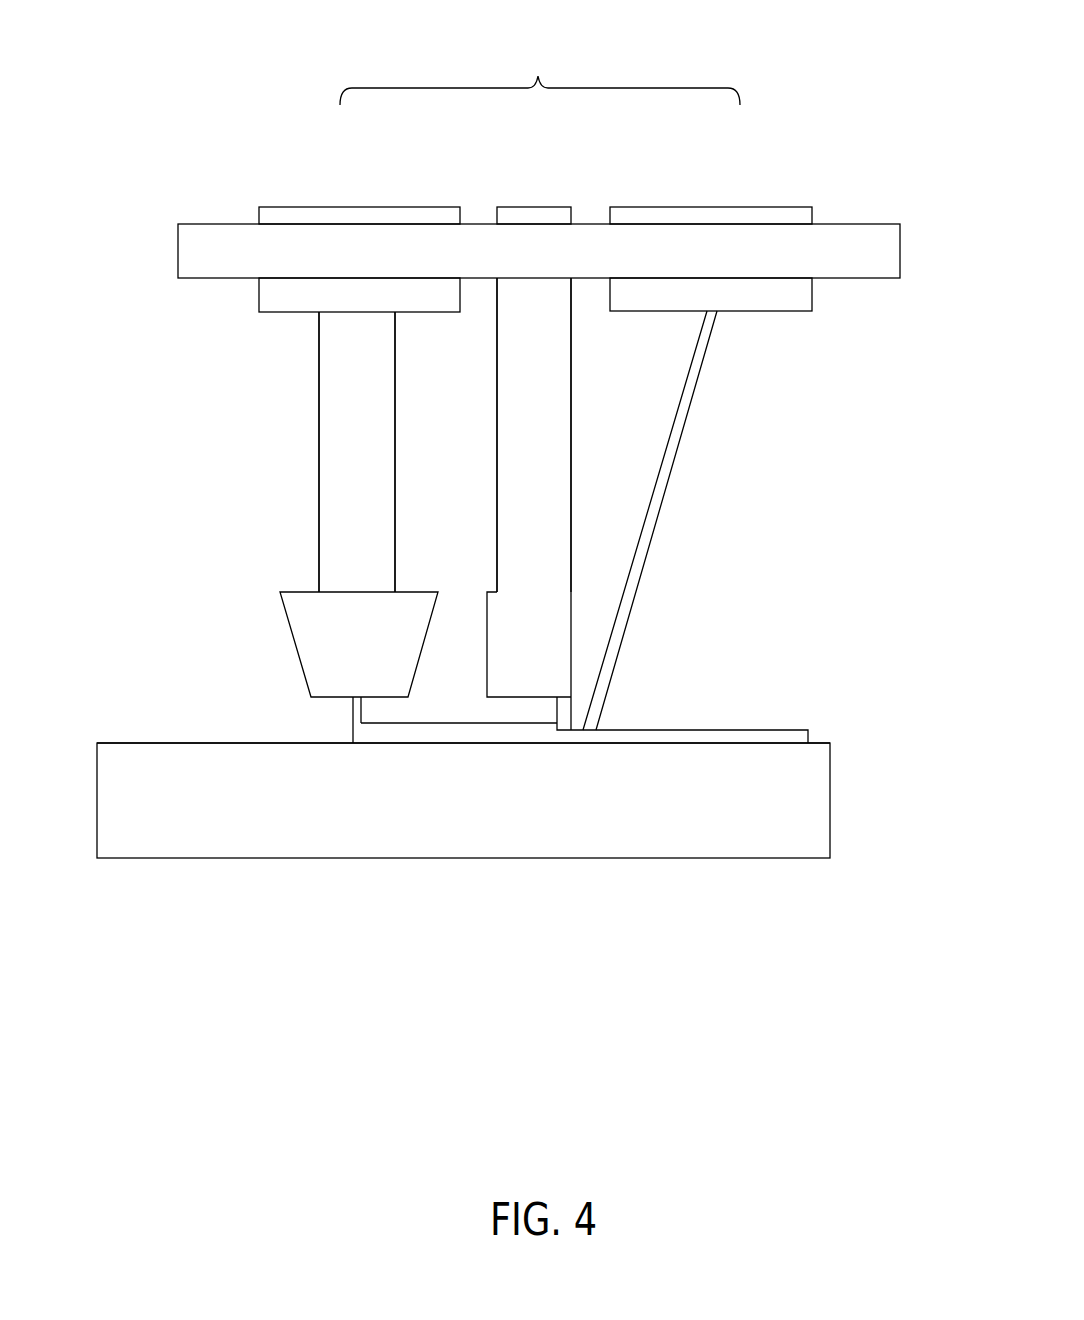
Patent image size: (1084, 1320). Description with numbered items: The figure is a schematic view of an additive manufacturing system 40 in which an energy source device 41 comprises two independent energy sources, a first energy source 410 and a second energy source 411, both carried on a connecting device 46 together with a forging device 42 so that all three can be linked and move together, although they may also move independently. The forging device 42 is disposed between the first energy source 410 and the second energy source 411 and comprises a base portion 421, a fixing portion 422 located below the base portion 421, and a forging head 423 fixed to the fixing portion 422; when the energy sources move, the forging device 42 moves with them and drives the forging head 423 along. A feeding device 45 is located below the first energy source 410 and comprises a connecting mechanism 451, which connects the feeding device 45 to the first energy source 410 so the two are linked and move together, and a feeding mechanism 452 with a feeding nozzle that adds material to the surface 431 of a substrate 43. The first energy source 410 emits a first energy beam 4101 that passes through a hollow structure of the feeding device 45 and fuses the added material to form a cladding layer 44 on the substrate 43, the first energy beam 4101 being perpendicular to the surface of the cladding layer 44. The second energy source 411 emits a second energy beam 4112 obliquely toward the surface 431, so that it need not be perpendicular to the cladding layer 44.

The additive manufacturing system 40 is at (262, 40).
The energy source device 41 is at (540, 75).
The first energy source 410 is at (407, 217).
The second energy source 411 is at (653, 220).
The second energy beam 4112 is at (665, 492).
The forging device 42 is at (533, 212).
The base portion 421 is at (571, 460).
The fixing portion 422 is at (540, 668).
The forging head 423 is at (582, 717).
The substrate 43 is at (830, 800).
The surface of the substrate 431 is at (158, 742).
The cladding layer 44 is at (418, 735).
The feeding device 45 is at (351, 478).
The connecting mechanism 451 is at (345, 550).
The feeding mechanism 452 is at (318, 627).
The first energy beam 4101 is at (358, 715).
The connecting device 46 is at (901, 250).